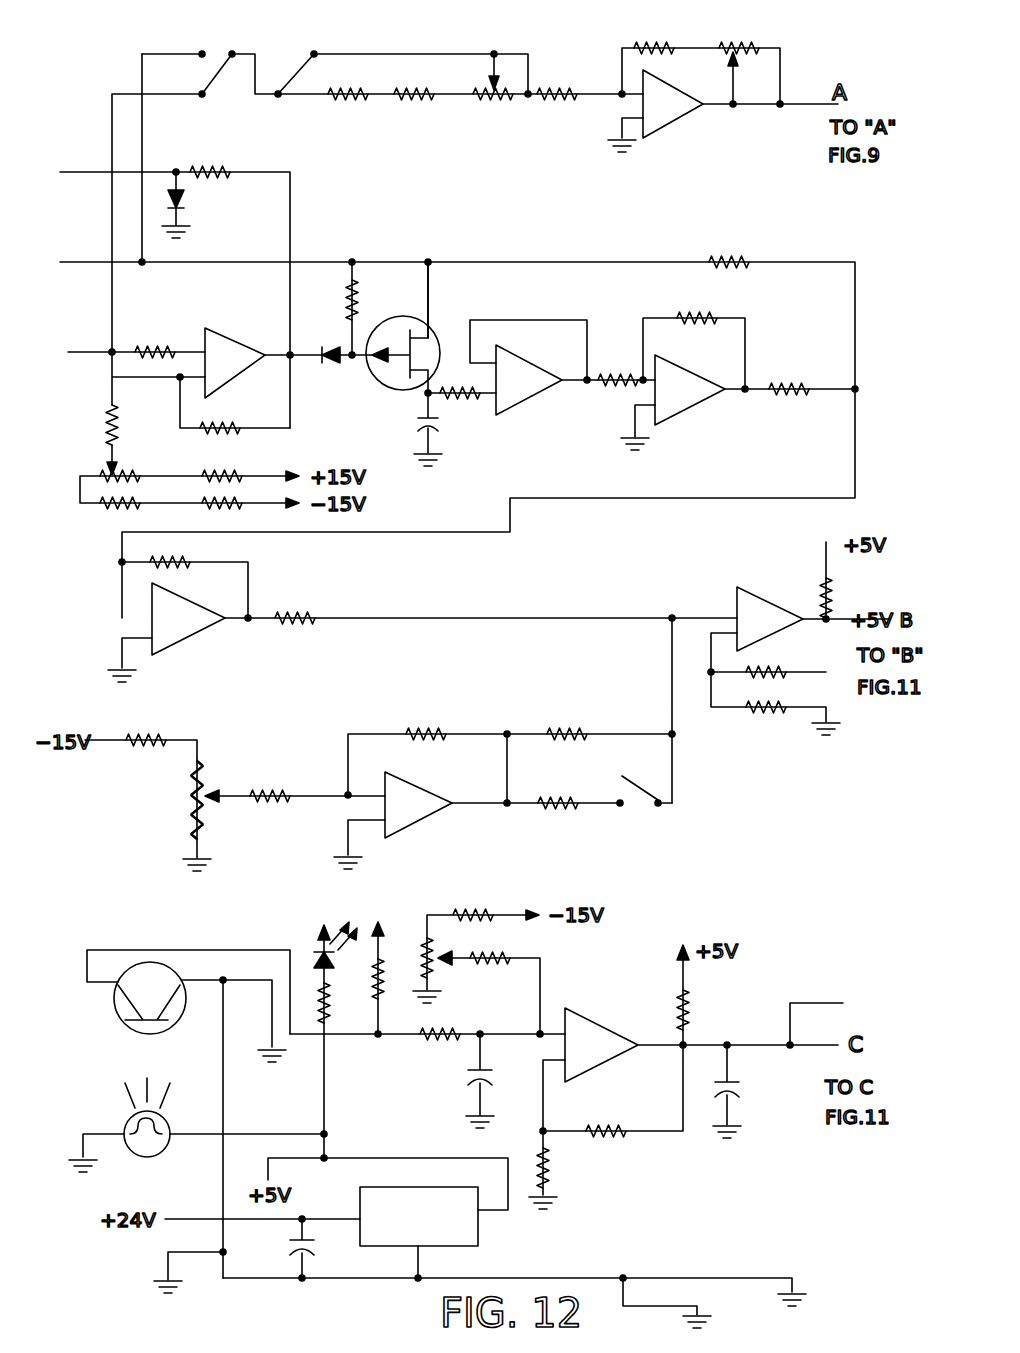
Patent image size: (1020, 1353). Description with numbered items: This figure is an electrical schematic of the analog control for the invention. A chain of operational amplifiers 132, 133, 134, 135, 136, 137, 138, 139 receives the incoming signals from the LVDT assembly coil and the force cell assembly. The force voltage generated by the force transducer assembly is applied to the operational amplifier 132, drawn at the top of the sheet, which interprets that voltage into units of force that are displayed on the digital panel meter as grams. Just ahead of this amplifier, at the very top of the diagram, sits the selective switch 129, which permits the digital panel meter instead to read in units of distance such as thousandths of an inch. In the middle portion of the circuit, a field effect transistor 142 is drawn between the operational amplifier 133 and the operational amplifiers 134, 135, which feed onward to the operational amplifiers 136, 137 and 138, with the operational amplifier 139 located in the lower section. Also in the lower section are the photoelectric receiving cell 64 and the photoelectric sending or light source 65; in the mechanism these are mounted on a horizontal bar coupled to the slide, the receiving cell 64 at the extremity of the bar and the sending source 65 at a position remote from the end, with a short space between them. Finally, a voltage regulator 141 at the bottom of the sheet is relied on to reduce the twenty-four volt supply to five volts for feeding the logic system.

The selective switch 129 is at (210, 50).
The operational amplifier 132 is at (670, 125).
The operational amplifier 133 is at (234, 340).
The operational amplifier 134 is at (520, 405).
The operational amplifier 135 is at (697, 402).
The operational amplifier 136 is at (178, 647).
The operational amplifier 137 is at (765, 596).
The operational amplifier 138 is at (410, 830).
The operational amplifier 139 is at (595, 1070).
The voltage regulator 141 is at (478, 1233).
The field effect transistor 142 is at (382, 386).
The photoelectric receiving cell 64 is at (118, 1020).
The photoelectric sending source 65 is at (125, 1124).